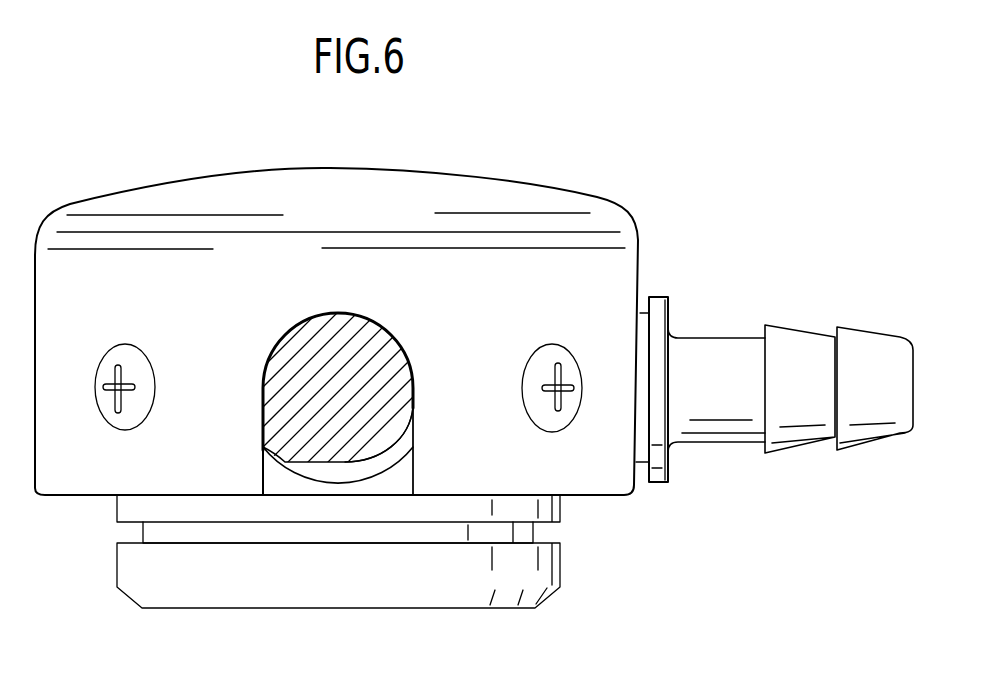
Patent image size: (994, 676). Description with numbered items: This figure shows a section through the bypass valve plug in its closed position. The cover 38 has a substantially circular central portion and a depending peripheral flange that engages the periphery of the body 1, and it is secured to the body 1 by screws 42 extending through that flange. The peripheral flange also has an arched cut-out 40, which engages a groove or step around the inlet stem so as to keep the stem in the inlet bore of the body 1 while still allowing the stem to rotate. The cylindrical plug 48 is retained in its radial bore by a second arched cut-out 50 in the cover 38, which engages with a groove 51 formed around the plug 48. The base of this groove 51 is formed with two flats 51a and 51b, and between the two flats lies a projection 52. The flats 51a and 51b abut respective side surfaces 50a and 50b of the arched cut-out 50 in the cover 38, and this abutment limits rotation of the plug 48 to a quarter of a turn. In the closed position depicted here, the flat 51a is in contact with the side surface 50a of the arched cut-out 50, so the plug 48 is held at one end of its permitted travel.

The cover 38 is at (536, 182).
The screws 42 is at (102, 373).
The cylindrical plug 48 is at (330, 352).
The flat 51a is at (275, 396).
The flat 51b is at (328, 447).
The side surface 50a is at (256, 447).
The side surface 50b is at (413, 410).
The second arched cut-out 50 is at (413, 474).
The projection 52 is at (272, 465).
The groove 51 is at (333, 472).
The body 1 is at (377, 495).
The arched cut-out 40 is at (623, 432).